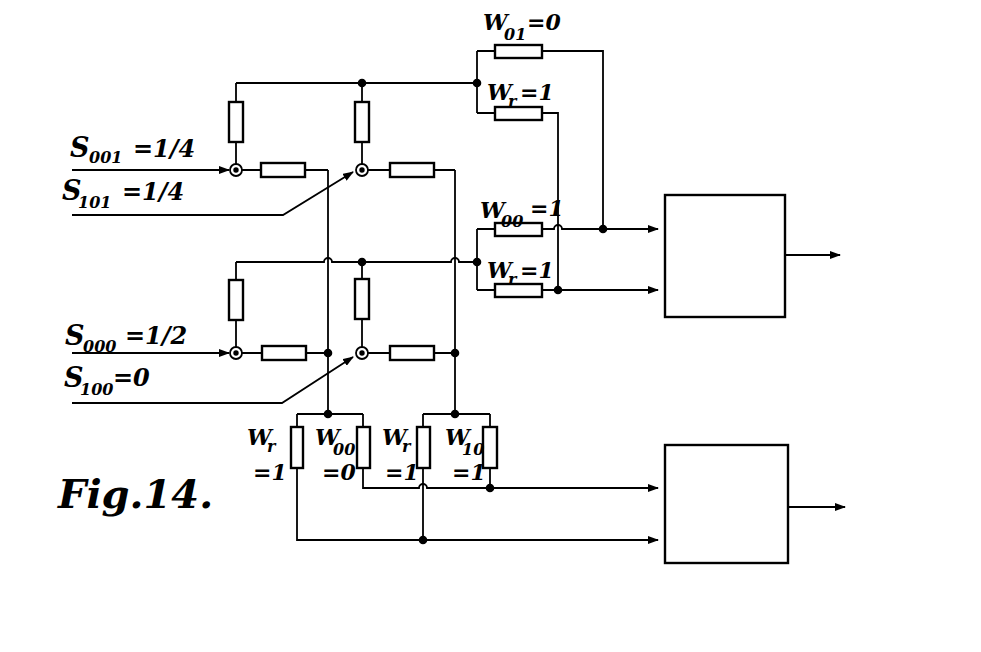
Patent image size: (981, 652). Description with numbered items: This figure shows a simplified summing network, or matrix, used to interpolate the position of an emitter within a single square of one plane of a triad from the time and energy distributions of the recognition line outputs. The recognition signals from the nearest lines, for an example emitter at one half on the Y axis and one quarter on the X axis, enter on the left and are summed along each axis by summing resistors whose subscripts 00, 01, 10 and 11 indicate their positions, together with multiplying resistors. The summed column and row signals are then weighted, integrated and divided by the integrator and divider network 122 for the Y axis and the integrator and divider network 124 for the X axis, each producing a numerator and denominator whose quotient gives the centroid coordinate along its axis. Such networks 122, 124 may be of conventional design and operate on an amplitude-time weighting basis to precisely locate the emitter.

The integrator and divider network 122 is at (814, 173).
The integrator and divider network 124 is at (753, 463).
The Y10/X10 resistor pair 10 is at (278, 130).
The Y11/X11 resistor pair 11 is at (405, 130).
The Y00/X00 resistor pair 00 is at (278, 311).
The Y01/X01 resistor pair 01 is at (405, 311).